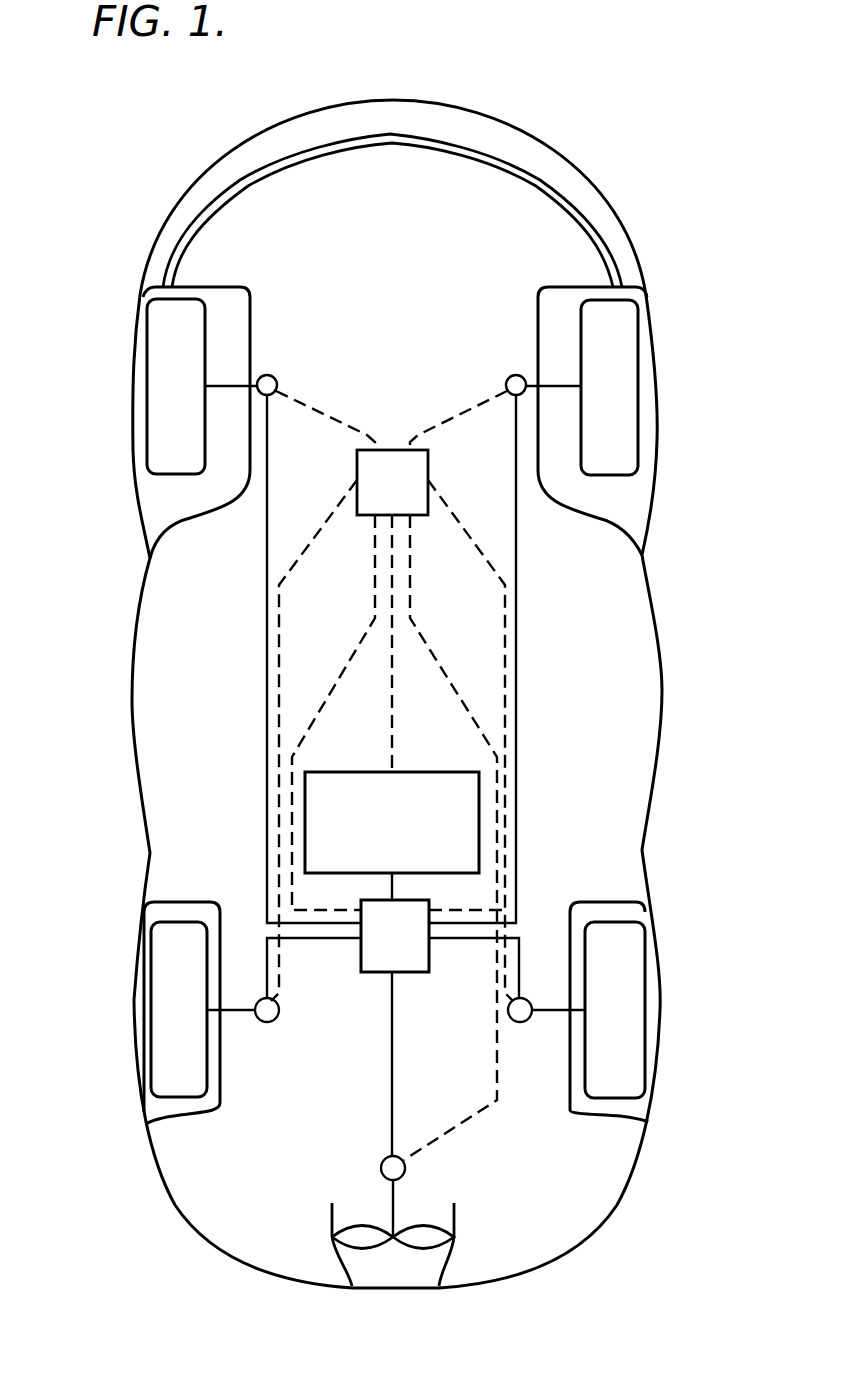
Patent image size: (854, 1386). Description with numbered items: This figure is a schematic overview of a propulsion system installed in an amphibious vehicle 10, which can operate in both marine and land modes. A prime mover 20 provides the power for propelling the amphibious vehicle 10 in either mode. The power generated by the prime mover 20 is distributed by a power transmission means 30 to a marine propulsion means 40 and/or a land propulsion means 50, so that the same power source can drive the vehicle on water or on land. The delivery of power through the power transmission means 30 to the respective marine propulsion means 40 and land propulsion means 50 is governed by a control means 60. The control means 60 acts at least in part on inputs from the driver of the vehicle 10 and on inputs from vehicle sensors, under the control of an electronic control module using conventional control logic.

The amphibious vehicle 10 is at (193, 162).
The prime mover 20 is at (387, 843).
The power transmission means 30 is at (392, 950).
The marine propulsion means 40 is at (447, 1263).
The land propulsion means 50 is at (157, 348).
The control means 60 is at (390, 498).